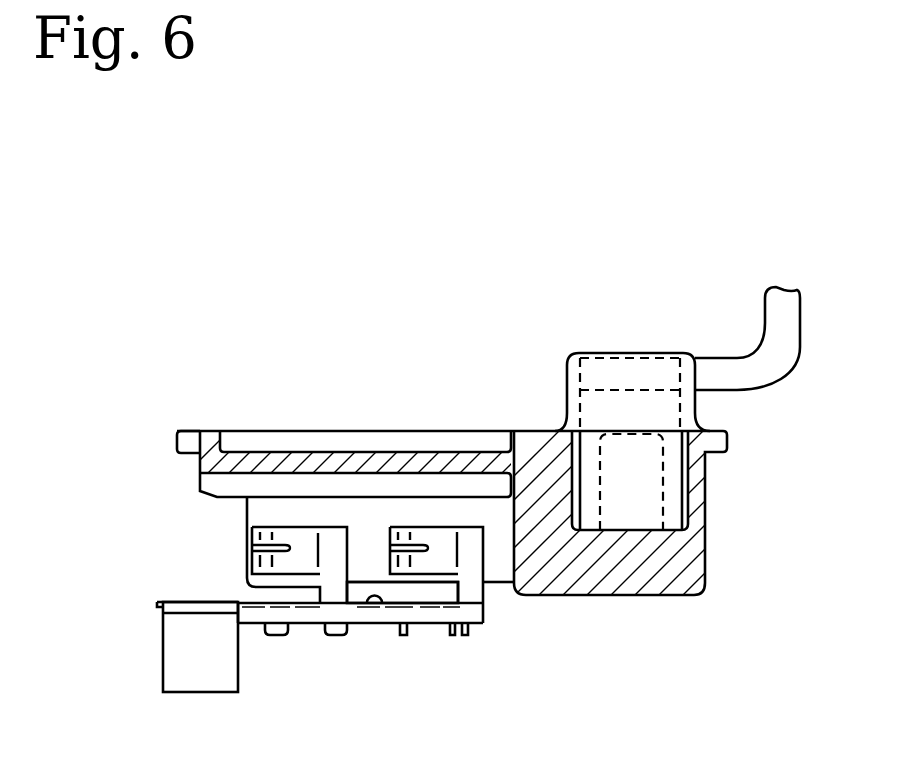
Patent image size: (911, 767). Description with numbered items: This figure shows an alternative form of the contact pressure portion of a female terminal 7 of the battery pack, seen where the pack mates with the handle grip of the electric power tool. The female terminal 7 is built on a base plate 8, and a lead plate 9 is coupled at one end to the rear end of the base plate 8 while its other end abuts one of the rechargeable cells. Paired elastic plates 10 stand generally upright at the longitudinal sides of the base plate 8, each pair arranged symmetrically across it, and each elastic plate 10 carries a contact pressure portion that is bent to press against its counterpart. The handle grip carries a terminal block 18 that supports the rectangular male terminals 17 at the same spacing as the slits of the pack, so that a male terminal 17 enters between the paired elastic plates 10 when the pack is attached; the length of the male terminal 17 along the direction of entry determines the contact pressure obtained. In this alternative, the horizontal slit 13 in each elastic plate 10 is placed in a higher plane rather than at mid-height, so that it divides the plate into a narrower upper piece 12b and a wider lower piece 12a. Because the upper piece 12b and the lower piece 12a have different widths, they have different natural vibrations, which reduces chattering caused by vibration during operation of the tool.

The female terminal 7 is at (331, 527).
The base plate 8 is at (377, 594).
The lead plate 9 is at (203, 662).
The elastic plate 10 is at (303, 516).
The lower piece 12a is at (282, 562).
The upper piece 12b is at (282, 533).
The slit 13 is at (247, 545).
The male terminal 17 is at (366, 524).
The terminal block 18 is at (683, 558).